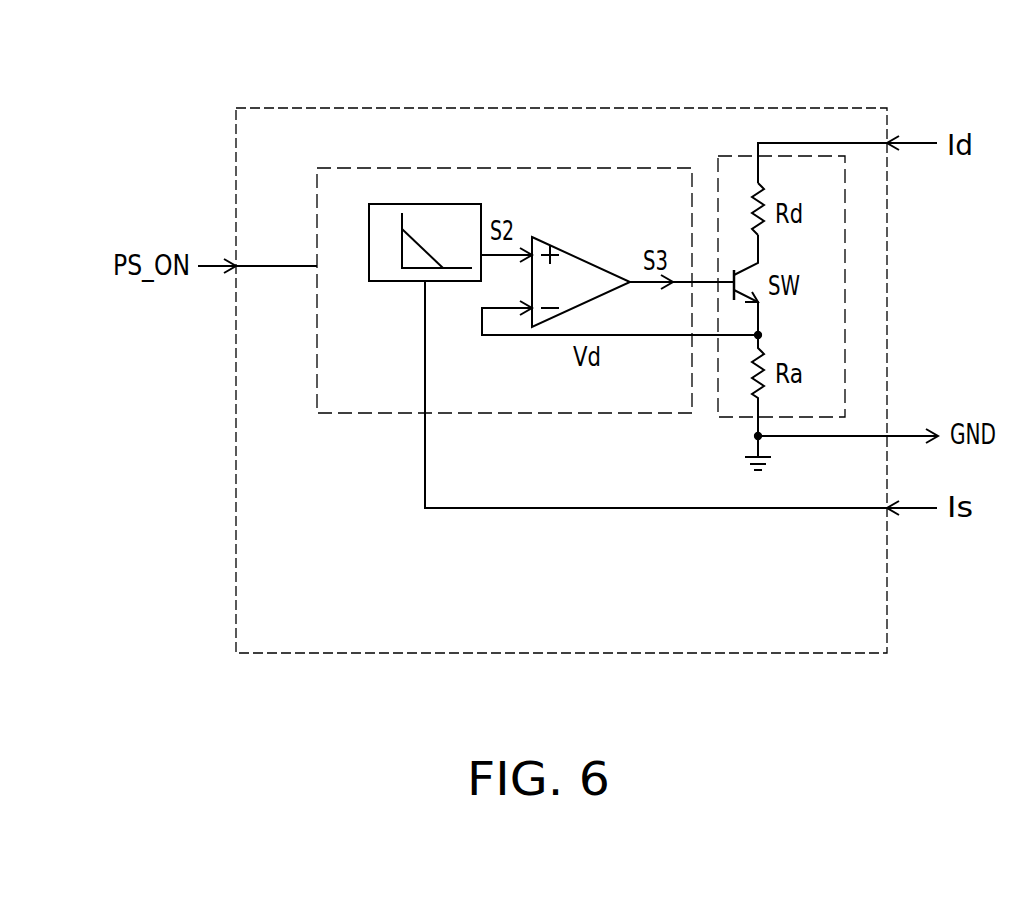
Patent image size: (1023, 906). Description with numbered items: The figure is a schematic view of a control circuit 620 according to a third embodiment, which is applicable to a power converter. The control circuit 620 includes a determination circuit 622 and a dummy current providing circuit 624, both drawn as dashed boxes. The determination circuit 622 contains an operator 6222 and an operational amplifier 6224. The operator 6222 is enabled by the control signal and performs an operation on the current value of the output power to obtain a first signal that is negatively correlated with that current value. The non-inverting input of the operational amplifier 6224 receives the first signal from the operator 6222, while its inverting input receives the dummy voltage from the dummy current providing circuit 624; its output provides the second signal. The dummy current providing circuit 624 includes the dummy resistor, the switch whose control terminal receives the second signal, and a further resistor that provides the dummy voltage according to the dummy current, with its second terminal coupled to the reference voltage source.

The control circuit 620 is at (793, 108).
The determination circuit 622 is at (596, 168).
The operator 6222 is at (413, 204).
The operational amplifier 6224 is at (590, 260).
The dummy current providing circuit 624 is at (728, 153).